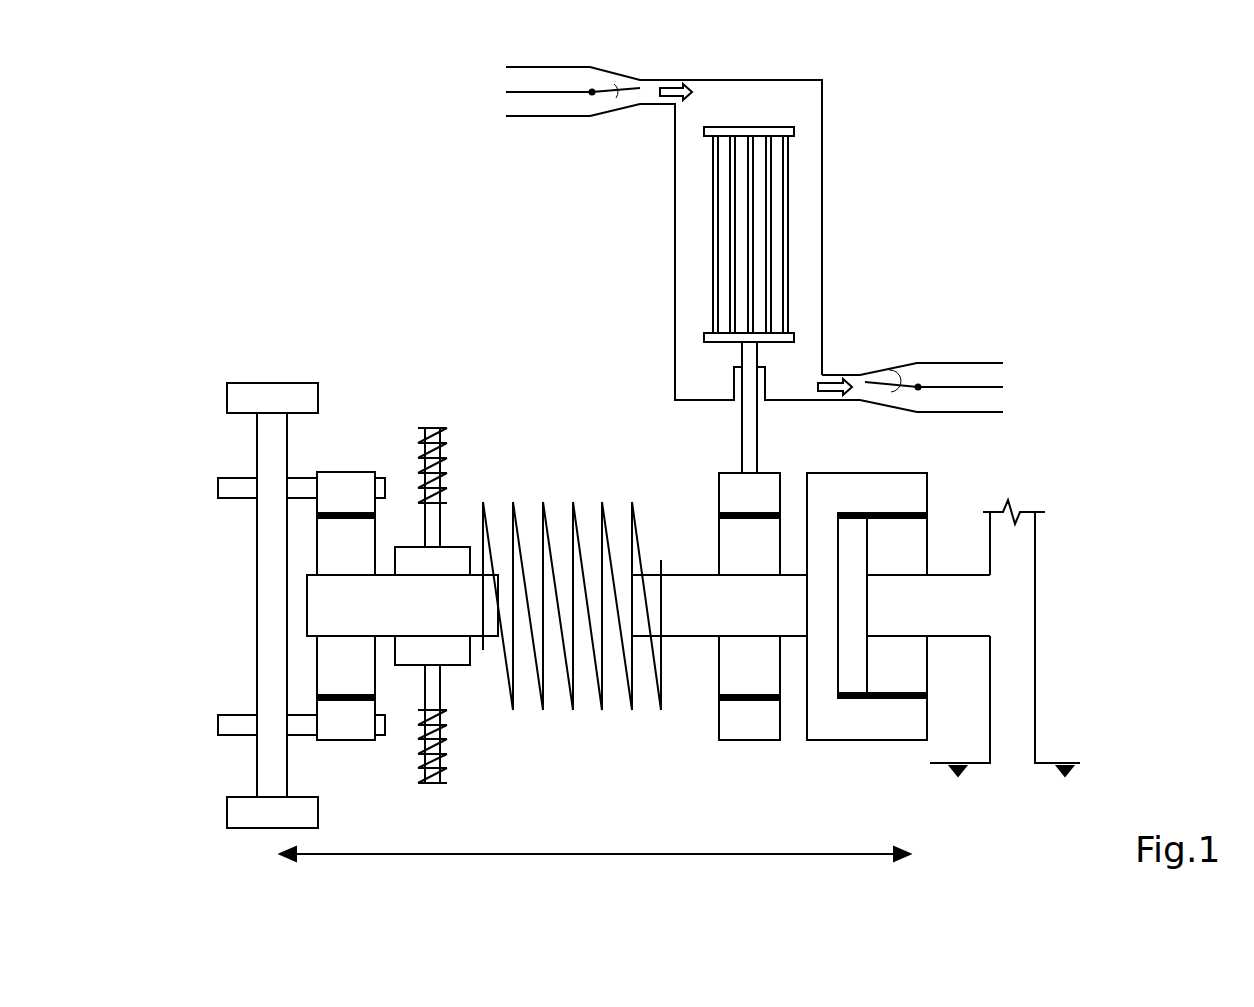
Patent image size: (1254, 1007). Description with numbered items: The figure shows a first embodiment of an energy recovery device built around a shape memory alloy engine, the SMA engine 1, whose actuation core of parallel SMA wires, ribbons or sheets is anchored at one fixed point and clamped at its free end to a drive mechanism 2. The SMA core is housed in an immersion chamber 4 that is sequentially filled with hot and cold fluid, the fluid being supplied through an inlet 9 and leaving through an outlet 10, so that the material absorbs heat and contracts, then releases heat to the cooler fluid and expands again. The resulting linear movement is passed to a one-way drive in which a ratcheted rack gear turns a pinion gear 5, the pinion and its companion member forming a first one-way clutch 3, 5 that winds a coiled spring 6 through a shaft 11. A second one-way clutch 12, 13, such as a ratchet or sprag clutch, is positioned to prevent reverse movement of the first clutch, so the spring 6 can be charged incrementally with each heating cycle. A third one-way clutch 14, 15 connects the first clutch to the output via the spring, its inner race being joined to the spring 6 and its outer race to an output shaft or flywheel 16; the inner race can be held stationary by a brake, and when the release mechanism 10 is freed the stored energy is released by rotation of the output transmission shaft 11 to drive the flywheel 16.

The SMA engine 1 is at (778, 237).
The drive mechanism 2 is at (595, 871).
The one-way clutch 3 is at (763, 732).
The immersion chamber 4 is at (693, 185).
The pinion gear 5 is at (733, 680).
The coiled spring 6 is at (568, 497).
The inlet 9 is at (487, 94).
The outlet 10 is at (1013, 385).
The output transmission shaft 11 is at (330, 615).
The second one-way clutch 12 is at (887, 723).
The second one-way clutch 13 is at (917, 540).
The third one-way clutch 14 is at (352, 488).
The third one-way clutch 15 is at (337, 557).
The flywheel 16 is at (248, 400).